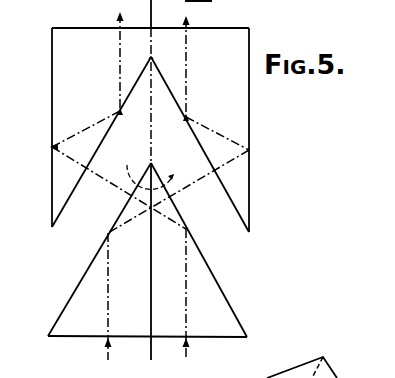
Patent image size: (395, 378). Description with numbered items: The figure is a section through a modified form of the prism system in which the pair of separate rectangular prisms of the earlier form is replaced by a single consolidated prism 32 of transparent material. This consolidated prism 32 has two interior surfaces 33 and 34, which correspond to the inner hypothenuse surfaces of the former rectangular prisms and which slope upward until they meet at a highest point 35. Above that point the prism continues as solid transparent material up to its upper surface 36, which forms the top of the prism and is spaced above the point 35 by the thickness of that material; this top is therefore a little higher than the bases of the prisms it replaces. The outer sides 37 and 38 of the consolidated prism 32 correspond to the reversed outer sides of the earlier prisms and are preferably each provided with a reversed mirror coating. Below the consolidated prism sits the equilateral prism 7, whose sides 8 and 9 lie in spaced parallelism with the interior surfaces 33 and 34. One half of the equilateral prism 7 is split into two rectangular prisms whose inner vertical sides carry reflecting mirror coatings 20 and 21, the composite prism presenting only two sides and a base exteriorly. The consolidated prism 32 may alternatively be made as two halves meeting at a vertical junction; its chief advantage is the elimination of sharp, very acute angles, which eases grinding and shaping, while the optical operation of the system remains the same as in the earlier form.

The equilateral prism 7 is at (55, 323).
The side of equilateral prism 8 is at (84, 274).
The side of equilateral prism 9 is at (208, 267).
The reflecting mirror coating 20 is at (131, 256).
The reflecting mirror coating 21 is at (163, 189).
The consolidated prism 32 is at (54, 27).
The interior surface 33 is at (68, 197).
The interior surface 34 is at (187, 120).
The highest point 35 is at (151, 57).
The upper surface 36 is at (152, 25).
The side of consolidated prism 37 is at (52, 97).
The side of consolidated prism 38 is at (250, 113).